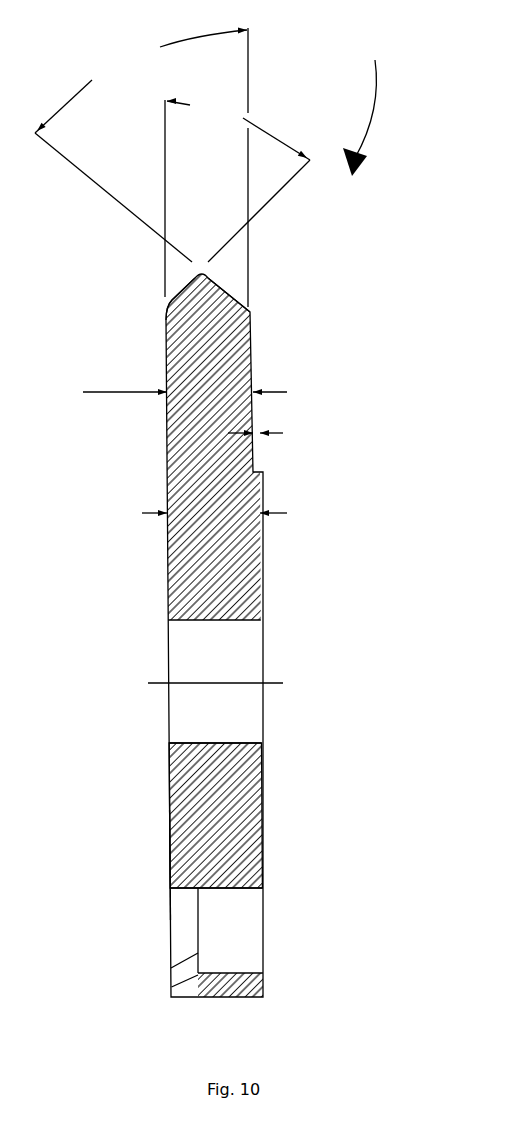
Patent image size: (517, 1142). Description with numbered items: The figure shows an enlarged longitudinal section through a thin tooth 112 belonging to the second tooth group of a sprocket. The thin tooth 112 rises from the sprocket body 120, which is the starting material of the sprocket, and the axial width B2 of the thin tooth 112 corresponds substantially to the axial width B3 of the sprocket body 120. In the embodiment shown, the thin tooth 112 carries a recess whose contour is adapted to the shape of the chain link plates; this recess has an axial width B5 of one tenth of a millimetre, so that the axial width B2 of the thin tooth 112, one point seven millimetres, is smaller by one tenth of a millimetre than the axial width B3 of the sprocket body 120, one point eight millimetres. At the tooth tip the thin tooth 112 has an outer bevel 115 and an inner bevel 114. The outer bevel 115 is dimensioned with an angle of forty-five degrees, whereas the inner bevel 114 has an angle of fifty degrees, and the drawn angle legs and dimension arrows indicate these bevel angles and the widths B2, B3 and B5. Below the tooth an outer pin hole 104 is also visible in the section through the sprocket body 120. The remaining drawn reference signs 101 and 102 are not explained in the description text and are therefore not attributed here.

The cutting tool body 101 is at (263, 830).
The shank wall 102 is at (172, 838).
The outer pin hole 104 is at (242, 710).
The thin tooth 112 is at (366, 96).
The inner bevel 114 is at (228, 292).
The outer bevel 115 is at (192, 283).
The sprocket body 120 is at (245, 862).
The axial width of the thin tooth B2 is at (215, 384).
The axial width of the sprocket body B3 is at (181, 520).
The axial width of the recess B5 is at (286, 432).